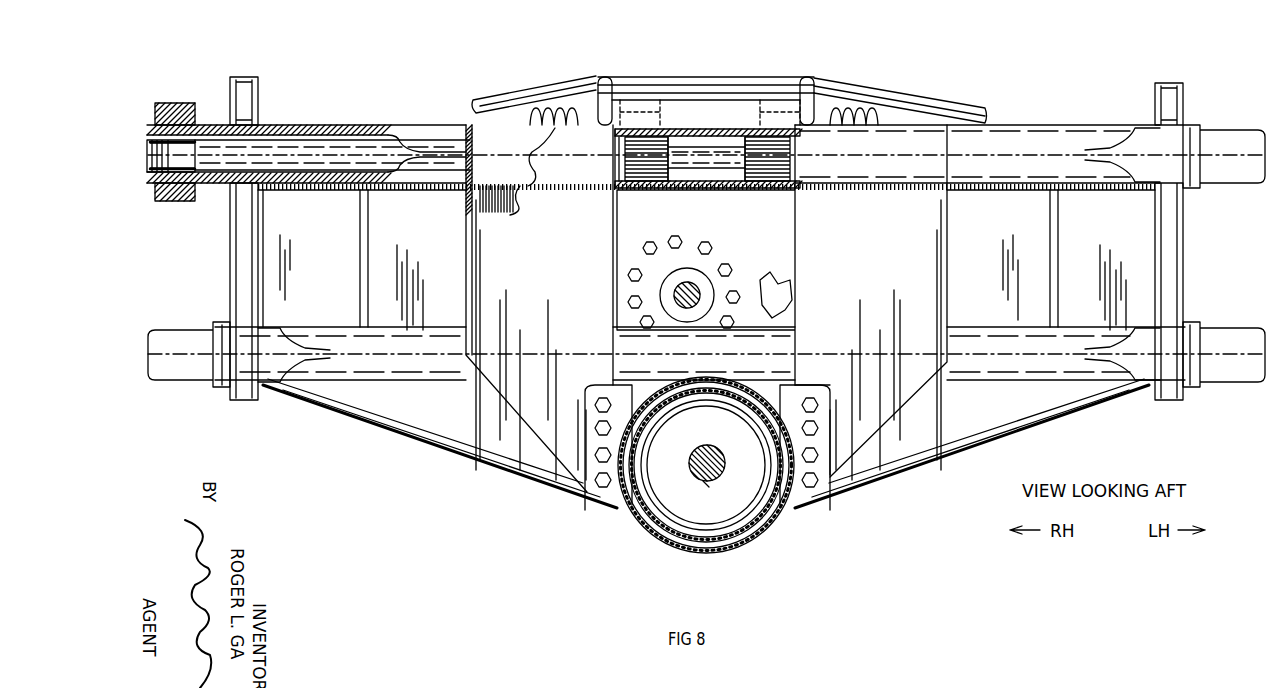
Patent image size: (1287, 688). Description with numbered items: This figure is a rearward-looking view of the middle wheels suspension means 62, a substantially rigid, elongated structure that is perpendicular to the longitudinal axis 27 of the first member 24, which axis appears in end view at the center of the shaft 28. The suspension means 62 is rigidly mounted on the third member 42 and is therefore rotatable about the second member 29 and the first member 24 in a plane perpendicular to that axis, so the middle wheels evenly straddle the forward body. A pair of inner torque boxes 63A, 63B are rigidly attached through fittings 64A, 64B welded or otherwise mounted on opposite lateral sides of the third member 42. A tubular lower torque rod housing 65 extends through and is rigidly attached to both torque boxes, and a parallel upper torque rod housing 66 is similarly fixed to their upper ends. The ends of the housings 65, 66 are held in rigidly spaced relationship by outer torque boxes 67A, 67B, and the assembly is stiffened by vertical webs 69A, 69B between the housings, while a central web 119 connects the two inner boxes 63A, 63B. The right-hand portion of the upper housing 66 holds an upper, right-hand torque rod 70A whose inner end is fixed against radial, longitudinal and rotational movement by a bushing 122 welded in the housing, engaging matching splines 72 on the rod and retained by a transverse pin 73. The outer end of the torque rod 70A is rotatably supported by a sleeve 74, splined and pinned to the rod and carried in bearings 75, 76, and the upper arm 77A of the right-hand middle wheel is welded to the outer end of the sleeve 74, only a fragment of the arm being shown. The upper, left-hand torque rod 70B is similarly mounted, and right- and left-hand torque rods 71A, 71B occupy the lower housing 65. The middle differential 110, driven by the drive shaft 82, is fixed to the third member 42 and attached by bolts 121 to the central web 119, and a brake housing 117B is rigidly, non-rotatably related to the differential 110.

The first member 24 is at (722, 397).
The longitudinal axis 27 is at (712, 460).
The shaft 28 is at (710, 482).
The second member 29 is at (686, 542).
The third member 42 is at (740, 545).
The middle wheels suspension means 62 is at (1069, 70).
The torque box 63A is at (558, 250).
The torque box 63B is at (893, 250).
The fitting 64A is at (626, 513).
The fitting 64B is at (797, 513).
The lower torque rod housing 65 is at (425, 385).
The upper torque rod housing 66 is at (520, 188).
The outer torque box 67A is at (258, 84).
The outer torque box 67B is at (1183, 96).
The vertical web 69A is at (440, 248).
The web 69B is at (1130, 250).
The upper, right-hand torque rod 70A is at (408, 168).
The upper, left-hand torque rod 70B is at (733, 150).
The right-hand torque rod 71A is at (185, 385).
The left-hand torque rod 71B is at (1215, 382).
The splines 72 is at (640, 160).
The transverse pin 73 is at (657, 138).
The sleeve 74 is at (204, 124).
The bearing 75 is at (396, 128).
The bearing 76 is at (282, 132).
The upper arm 77A is at (188, 105).
The drive shaft 82 is at (700, 300).
The middle differential 110 is at (776, 301).
The housing 117B is at (588, 106).
The central web 119 is at (753, 235).
The bolts 121 is at (725, 257).
The bushing 122 is at (676, 173).